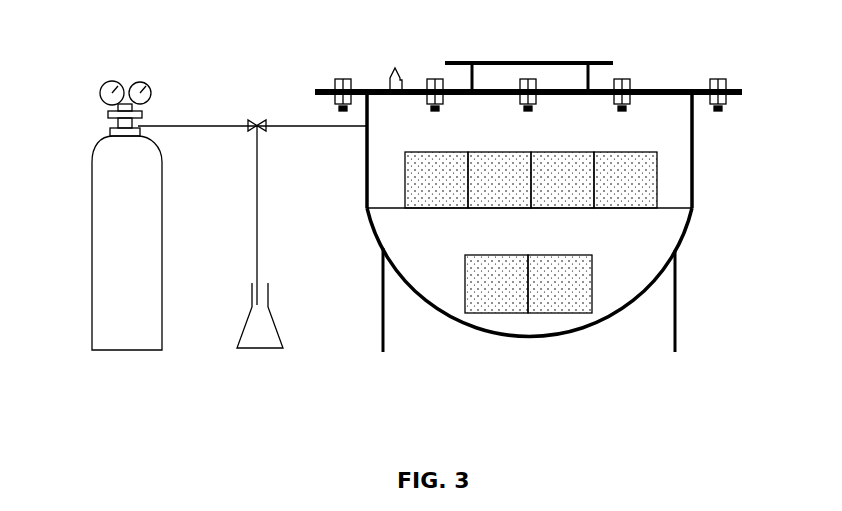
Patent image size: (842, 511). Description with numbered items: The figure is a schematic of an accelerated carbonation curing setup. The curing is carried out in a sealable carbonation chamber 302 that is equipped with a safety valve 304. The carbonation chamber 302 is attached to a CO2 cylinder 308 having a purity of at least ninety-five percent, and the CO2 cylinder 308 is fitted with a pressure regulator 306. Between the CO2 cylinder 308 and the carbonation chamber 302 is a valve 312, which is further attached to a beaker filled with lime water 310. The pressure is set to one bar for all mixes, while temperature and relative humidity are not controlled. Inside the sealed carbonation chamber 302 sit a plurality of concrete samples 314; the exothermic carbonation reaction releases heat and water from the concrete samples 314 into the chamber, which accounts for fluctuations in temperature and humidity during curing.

The carbonation chamber 302 is at (696, 193).
The safety valve 304 is at (341, 85).
The pressure regulator 306 is at (101, 96).
The CO2 cylinder 308 is at (91, 353).
The lime water 310 is at (268, 321).
The valve 312 is at (253, 129).
The concrete samples 314 is at (440, 151).